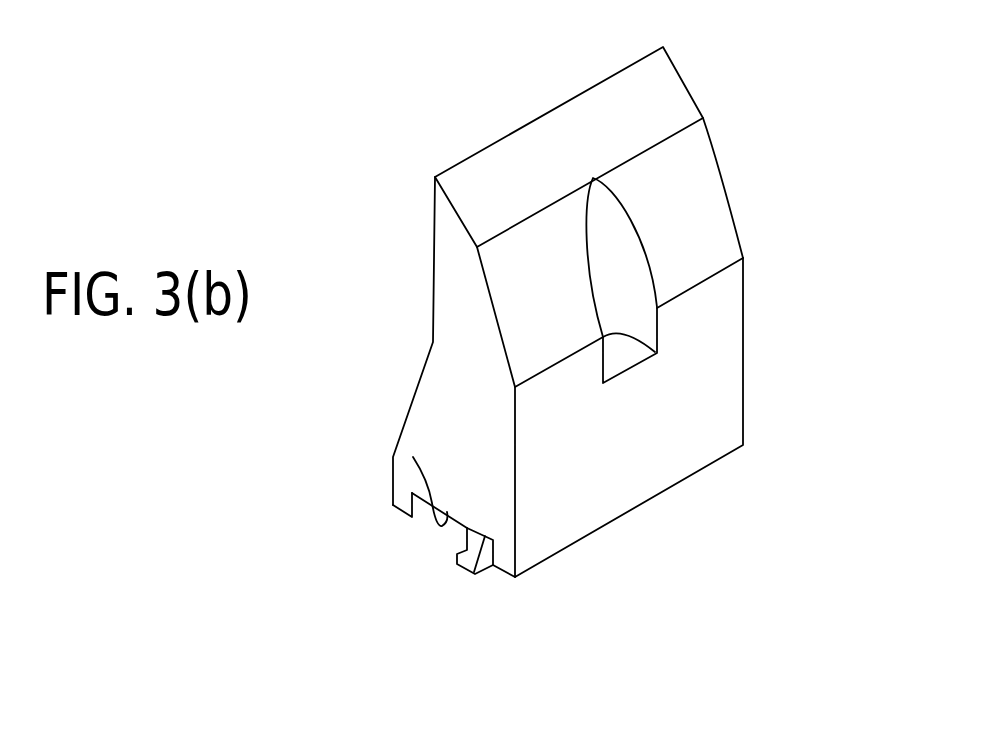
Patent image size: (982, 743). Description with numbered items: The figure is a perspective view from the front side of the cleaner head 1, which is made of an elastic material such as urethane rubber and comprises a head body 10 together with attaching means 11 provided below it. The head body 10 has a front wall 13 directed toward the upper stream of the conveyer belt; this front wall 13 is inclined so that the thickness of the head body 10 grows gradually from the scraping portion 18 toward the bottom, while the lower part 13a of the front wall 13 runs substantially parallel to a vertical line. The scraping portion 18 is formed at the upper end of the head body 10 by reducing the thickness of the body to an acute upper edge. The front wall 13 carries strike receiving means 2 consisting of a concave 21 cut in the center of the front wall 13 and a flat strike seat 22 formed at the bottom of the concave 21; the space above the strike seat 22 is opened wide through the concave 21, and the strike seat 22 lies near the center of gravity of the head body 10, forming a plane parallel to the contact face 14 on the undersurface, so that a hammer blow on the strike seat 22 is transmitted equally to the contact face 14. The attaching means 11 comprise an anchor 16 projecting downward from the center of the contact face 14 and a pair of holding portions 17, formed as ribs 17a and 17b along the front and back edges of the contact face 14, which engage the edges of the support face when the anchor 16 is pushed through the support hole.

The cleaner head 1 is at (373, 132).
The head body 10 is at (455, 315).
The attaching means 11 is at (372, 638).
The front wall 13 is at (688, 190).
The lower part of the front wall 13a is at (658, 455).
The contact face 14 is at (413, 457).
The anchor 16 is at (458, 558).
The holding portions 17 is at (401, 543).
The rib 17a is at (508, 572).
The rib 17b is at (392, 496).
The scraping portion 18 is at (530, 118).
The strike receiving means 2 is at (803, 220).
The concave 21 is at (633, 273).
The strike seat 22 is at (637, 343).